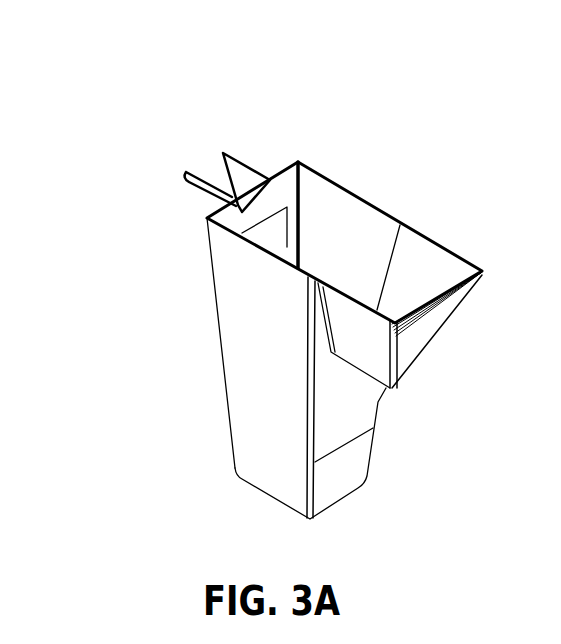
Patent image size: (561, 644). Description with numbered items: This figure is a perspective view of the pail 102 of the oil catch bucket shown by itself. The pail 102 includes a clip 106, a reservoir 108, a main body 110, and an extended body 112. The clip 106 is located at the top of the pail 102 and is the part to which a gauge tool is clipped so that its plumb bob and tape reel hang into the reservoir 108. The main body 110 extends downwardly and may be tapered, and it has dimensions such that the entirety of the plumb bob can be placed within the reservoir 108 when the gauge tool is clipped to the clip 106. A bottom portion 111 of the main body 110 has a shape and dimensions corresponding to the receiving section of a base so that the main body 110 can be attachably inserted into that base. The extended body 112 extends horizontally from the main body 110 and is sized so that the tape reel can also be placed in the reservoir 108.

The pail 102 is at (136, 64).
The clip 106 is at (217, 178).
The reservoir 108 is at (325, 240).
The main body 110 is at (235, 338).
The bottom portion 111 is at (270, 495).
The extended body 112 is at (407, 350).